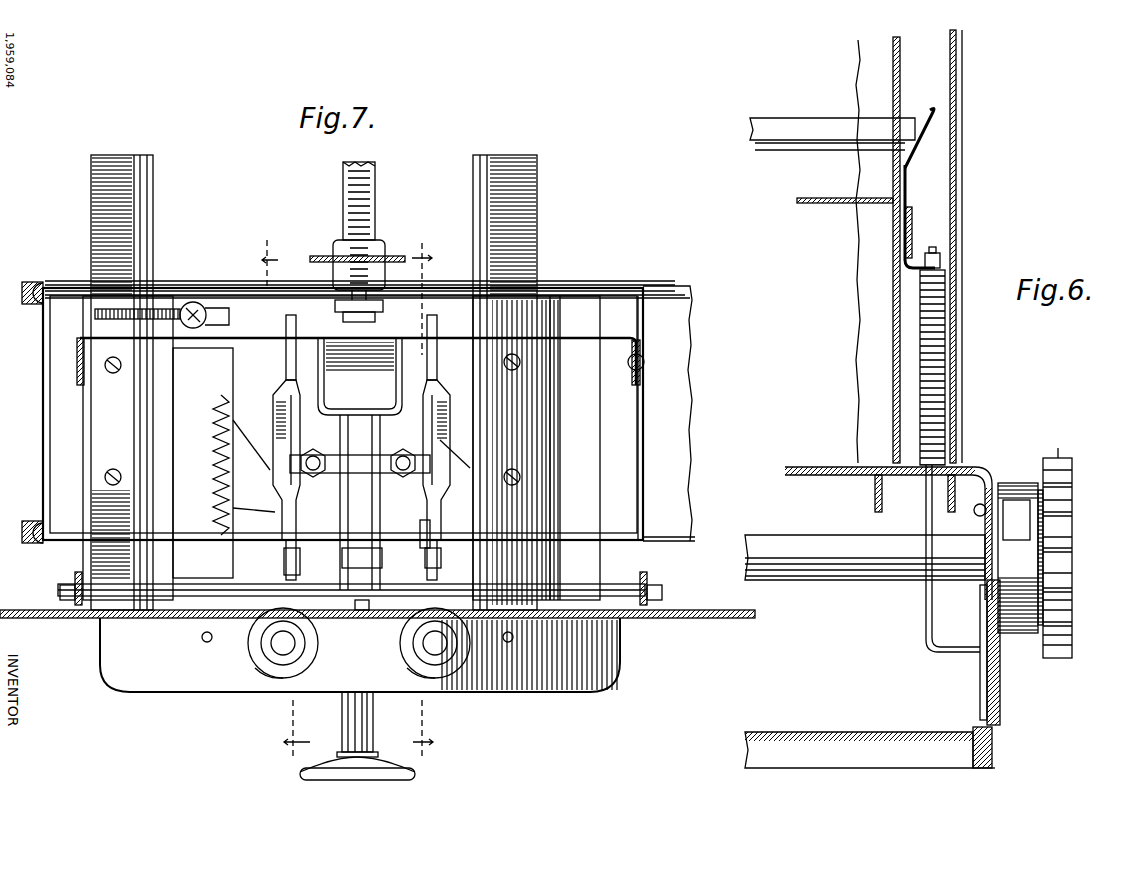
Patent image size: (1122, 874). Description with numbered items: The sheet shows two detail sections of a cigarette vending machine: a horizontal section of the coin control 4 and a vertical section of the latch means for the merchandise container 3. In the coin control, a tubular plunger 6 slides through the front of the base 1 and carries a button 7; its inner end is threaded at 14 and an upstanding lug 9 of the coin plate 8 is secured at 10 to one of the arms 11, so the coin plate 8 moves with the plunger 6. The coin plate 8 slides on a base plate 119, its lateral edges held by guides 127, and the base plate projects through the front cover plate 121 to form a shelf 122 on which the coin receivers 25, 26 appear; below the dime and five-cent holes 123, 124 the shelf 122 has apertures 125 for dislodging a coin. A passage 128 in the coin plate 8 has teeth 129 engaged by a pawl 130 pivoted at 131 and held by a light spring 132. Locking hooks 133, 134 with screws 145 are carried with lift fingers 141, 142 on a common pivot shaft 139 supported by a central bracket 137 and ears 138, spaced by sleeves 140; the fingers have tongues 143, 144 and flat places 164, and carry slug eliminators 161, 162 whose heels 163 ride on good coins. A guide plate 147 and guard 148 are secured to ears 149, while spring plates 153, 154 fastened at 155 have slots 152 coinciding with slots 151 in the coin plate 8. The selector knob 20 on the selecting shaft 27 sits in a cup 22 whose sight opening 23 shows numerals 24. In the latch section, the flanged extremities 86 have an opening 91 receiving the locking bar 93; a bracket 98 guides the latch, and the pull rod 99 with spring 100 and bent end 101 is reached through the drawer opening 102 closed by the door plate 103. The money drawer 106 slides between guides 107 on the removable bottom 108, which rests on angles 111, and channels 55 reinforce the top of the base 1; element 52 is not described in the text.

In FIG. 7, the guides 127 is at (92, 243).
In FIG. 7, the tubular plunger 6 is at (375, 165).
In FIG. 7, the threaded inner end 14 is at (343, 180).
In FIG. 7, the arms 11 is at (322, 256).
In FIG. 7, the securing point 10 is at (352, 278).
In FIG. 7, the upstanding lug 9 is at (440, 272).
In FIG. 7, the selector knob 20 is at (422, 501).
In FIG. 6, the selector knob 20 is at (1066, 442).
In FIG. 7, the base plate 119 is at (248, 305).
In FIG. 7, the longitudinal guides 107 is at (656, 293).
In FIG. 7, the money drawer 106 is at (670, 398).
In FIG. 7, the guide plate 147 is at (602, 332).
In FIG. 7, the coin plate 8 is at (160, 498).
In FIG. 7, the ears 149 is at (78, 340).
In FIG. 7, the light spring 132 is at (160, 310).
In FIG. 7, the pawl pivot 131 is at (194, 302).
In FIG. 7, the pawl 130 is at (216, 306).
In FIG. 7, the guard 148 is at (332, 350).
In FIG. 7, the lift finger 141 is at (287, 366).
In FIG. 7, the lift finger 142 is at (438, 366).
In FIG. 7, the slots 151 is at (275, 394).
In FIG. 7, the horizontally flat places 164 is at (273, 445).
In FIG. 7, the contact screws 145 is at (402, 452).
In FIG. 7, the tongue 143 is at (313, 449).
In FIG. 7, the tongue 144 is at (404, 449).
In FIG. 7, the spring plate 154 is at (458, 477).
In FIG. 7, the locking hook 133 is at (357, 545).
In FIG. 7, the locking hook 134 is at (340, 645).
In FIG. 7, the slug eliminator 161 is at (292, 546).
In FIG. 7, the slug eliminator 162 is at (445, 537).
In FIG. 7, the heels 163 is at (442, 557).
In FIG. 7, the teeth 129 is at (221, 396).
In FIG. 7, the spring plate 153 is at (229, 477).
In FIG. 7, the slots 152 is at (272, 513).
In FIG. 7, the passage 128 is at (178, 566).
In FIG. 7, the spacer sleeves 140 is at (178, 598).
In FIG. 7, the ears 138 is at (76, 578).
In FIG. 7, the common pivot shaft 139 is at (60, 592).
In FIG. 7, the front cover plate 121 is at (655, 619).
In FIG. 7, the shelf 122 is at (132, 690).
In FIG. 7, the apertures 125 is at (262, 648).
In FIG. 7, the dime hole 123 is at (278, 685).
In FIG. 7, the five-cent hole 124 is at (440, 695).
In FIG. 7, the coin receiver 25 is at (262, 690).
In FIG. 7, the coin receiver 26 is at (450, 700).
In FIG. 7, the central bracket 137 is at (362, 615).
In FIG. 7, the securing points 155 is at (540, 638).
In FIG. 7, the button 7 is at (360, 772).
In FIG. 6, the outer flanged extremities 86 is at (893, 59).
In FIG. 6, the merchandise container 3 is at (963, 202).
In FIG. 6, the locking bar 93 is at (808, 126).
In FIG. 6, the opening 91 is at (905, 110).
In FIG. 6, the bracket 98 is at (913, 228).
In FIG. 6, the bent end 101 is at (942, 268).
In FIG. 6, the spring 100 is at (946, 380).
In FIG. 6, the bracket 52 is at (976, 468).
In FIG. 6, the channels 55 is at (876, 502).
In FIG. 6, the pull rod 99 is at (927, 612).
In FIG. 6, the selecting shaft 27 is at (856, 582).
In FIG. 6, the sight opening 23 is at (1012, 497).
In FIG. 6, the coin control 4 is at (1016, 520).
In FIG. 6, the numerals 24 is at (1022, 523).
In FIG. 6, the cup 22 is at (1046, 626).
In FIG. 6, the door plate 103 is at (1001, 700).
In FIG. 6, the drawer opening 102 is at (984, 712).
In FIG. 6, the angles 111 is at (993, 728).
In FIG. 6, the removable bottom 108 is at (818, 738).
In FIG. 6, the base 1 is at (993, 760).